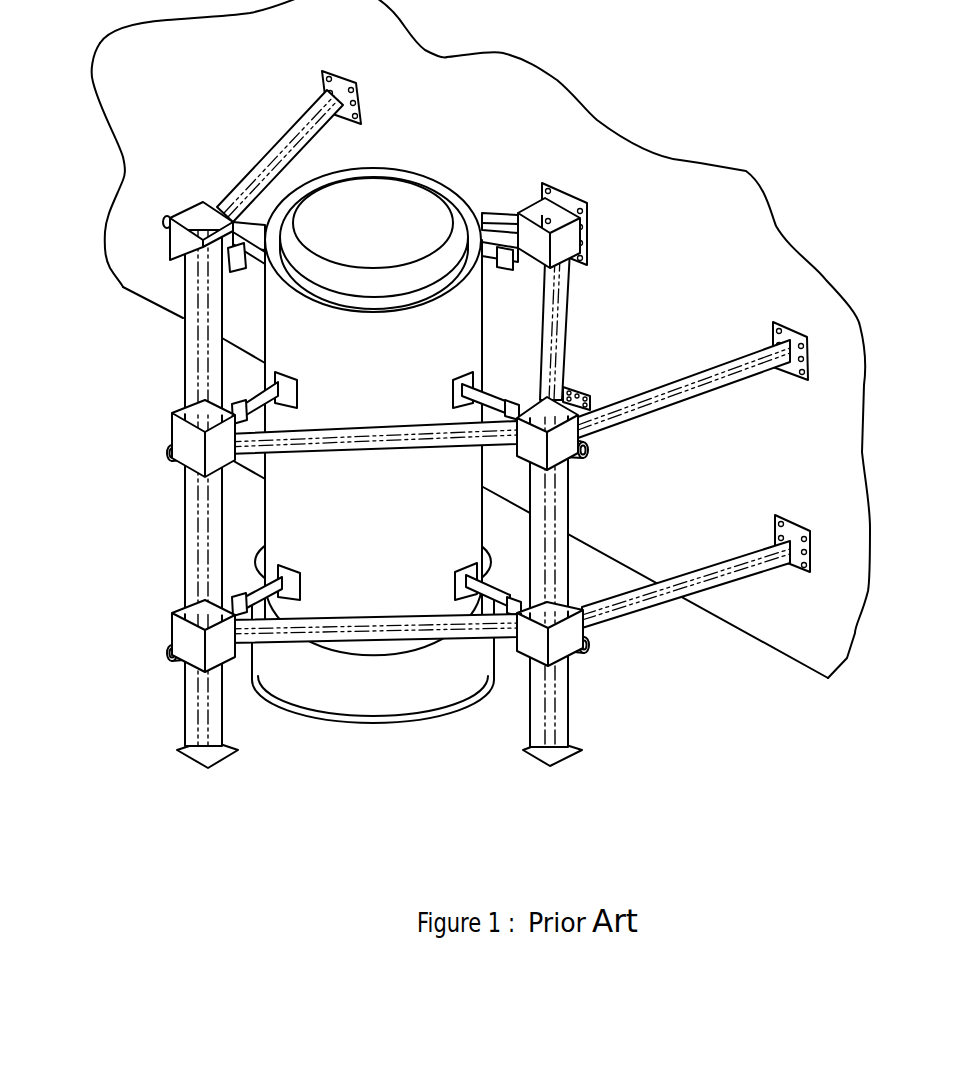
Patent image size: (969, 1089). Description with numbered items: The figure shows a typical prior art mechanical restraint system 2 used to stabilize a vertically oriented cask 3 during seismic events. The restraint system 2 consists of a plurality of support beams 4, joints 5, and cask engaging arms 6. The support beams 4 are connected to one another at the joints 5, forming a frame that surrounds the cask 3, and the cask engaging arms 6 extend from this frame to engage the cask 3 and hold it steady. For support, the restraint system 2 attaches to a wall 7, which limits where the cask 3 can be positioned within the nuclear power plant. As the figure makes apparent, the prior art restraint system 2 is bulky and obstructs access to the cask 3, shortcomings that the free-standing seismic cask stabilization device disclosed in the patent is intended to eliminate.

The restraint system 2 is at (134, 618).
The cask 3 is at (408, 158).
The support beams 4 is at (200, 513).
The joints 5 is at (195, 213).
The cask engaging arms 6 is at (480, 398).
The wall 7 is at (776, 277).